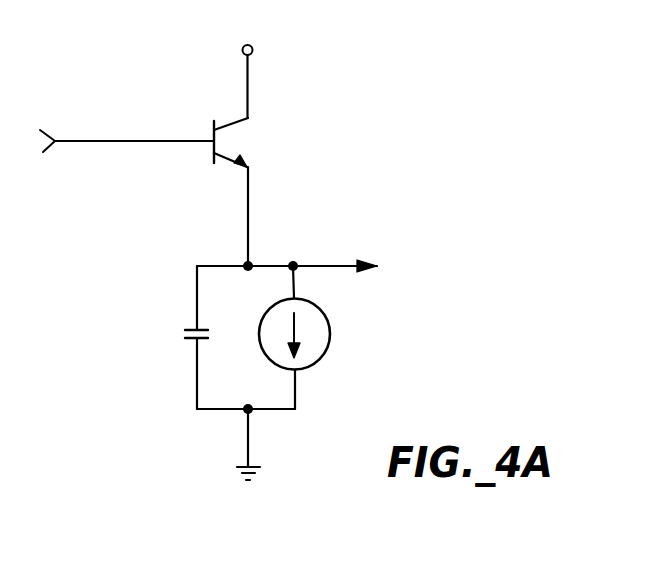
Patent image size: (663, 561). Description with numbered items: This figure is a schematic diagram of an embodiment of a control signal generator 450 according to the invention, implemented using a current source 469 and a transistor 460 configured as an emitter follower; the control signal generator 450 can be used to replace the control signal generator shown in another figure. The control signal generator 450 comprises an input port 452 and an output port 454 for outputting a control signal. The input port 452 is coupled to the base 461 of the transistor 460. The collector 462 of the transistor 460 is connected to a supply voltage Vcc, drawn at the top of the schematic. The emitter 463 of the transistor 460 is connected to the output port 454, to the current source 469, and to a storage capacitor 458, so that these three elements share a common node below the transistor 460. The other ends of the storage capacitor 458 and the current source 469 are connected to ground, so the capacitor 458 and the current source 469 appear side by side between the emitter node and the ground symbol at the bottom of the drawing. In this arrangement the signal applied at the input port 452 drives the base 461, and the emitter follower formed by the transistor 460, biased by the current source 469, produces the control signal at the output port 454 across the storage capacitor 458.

The control signal generator 450 is at (153, 446).
The input port 452 is at (52, 145).
The output port 454 is at (358, 263).
The storage capacitor 458 is at (192, 328).
The transistor 460 is at (212, 134).
The base 461 is at (135, 143).
The collector 462 is at (230, 131).
The emitter 463 is at (230, 156).
The current source 469 is at (330, 328).